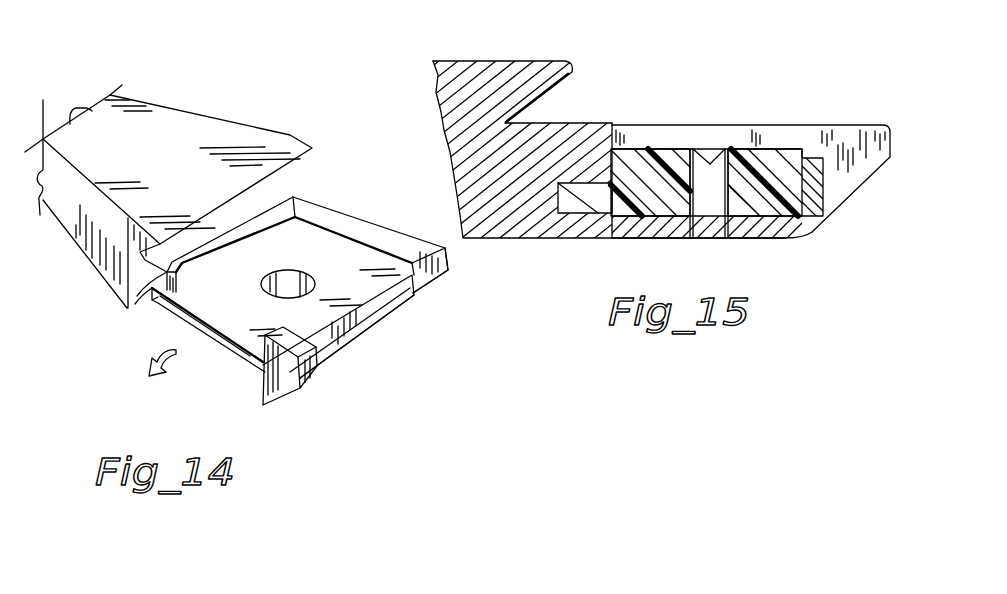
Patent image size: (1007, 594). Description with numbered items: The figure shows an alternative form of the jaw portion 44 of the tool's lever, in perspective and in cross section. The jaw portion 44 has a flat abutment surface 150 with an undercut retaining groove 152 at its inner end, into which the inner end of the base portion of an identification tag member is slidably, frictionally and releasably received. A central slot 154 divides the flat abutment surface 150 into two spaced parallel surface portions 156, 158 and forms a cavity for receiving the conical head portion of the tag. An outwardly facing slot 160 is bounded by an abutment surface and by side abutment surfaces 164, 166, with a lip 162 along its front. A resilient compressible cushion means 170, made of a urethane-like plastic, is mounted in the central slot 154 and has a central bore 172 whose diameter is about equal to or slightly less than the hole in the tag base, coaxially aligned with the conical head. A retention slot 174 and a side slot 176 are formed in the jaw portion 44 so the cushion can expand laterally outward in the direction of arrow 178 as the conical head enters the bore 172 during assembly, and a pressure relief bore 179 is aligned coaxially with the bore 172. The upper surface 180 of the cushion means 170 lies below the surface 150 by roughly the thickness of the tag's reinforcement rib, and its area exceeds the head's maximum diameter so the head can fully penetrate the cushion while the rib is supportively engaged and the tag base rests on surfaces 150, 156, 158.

In FIG. 14, the jaw portion 44 is at (153, 104).
In FIG. 15, the jaw portion 44 is at (440, 61).
In FIG. 14, the flat abutment surface 150 is at (313, 188).
In FIG. 15, the flat abutment surface 150 is at (580, 120).
In FIG. 14, the undercut retaining groove 152 is at (220, 217).
In FIG. 15, the undercut retaining groove 152 is at (553, 105).
In FIG. 14, the central slot 154 is at (333, 255).
In FIG. 14, the surface portion 156 is at (243, 388).
In FIG. 14, the surface portion 158 is at (393, 237).
In FIG. 14, the outwardly facing slot 160 is at (365, 338).
In FIG. 14, the front lip 162 is at (345, 338).
In FIG. 14, the side abutment surface 164 is at (318, 390).
In FIG. 14, the side abutment surface 166 is at (408, 285).
In FIG. 14, the resilient compressible cushion means 170 is at (250, 350).
In FIG. 15, the resilient compressible cushion means 170 is at (772, 170).
In FIG. 14, the central bore 172 is at (270, 278).
In FIG. 15, the central bore 172 is at (703, 202).
In FIG. 14, the retention slot 174 is at (145, 296).
In FIG. 14, the side slot 176 is at (155, 287).
In FIG. 14, the arrow 178 is at (134, 380).
In FIG. 15, the pressure relief bore 179 is at (720, 253).
In FIG. 15, the upper surface 180 is at (762, 150).